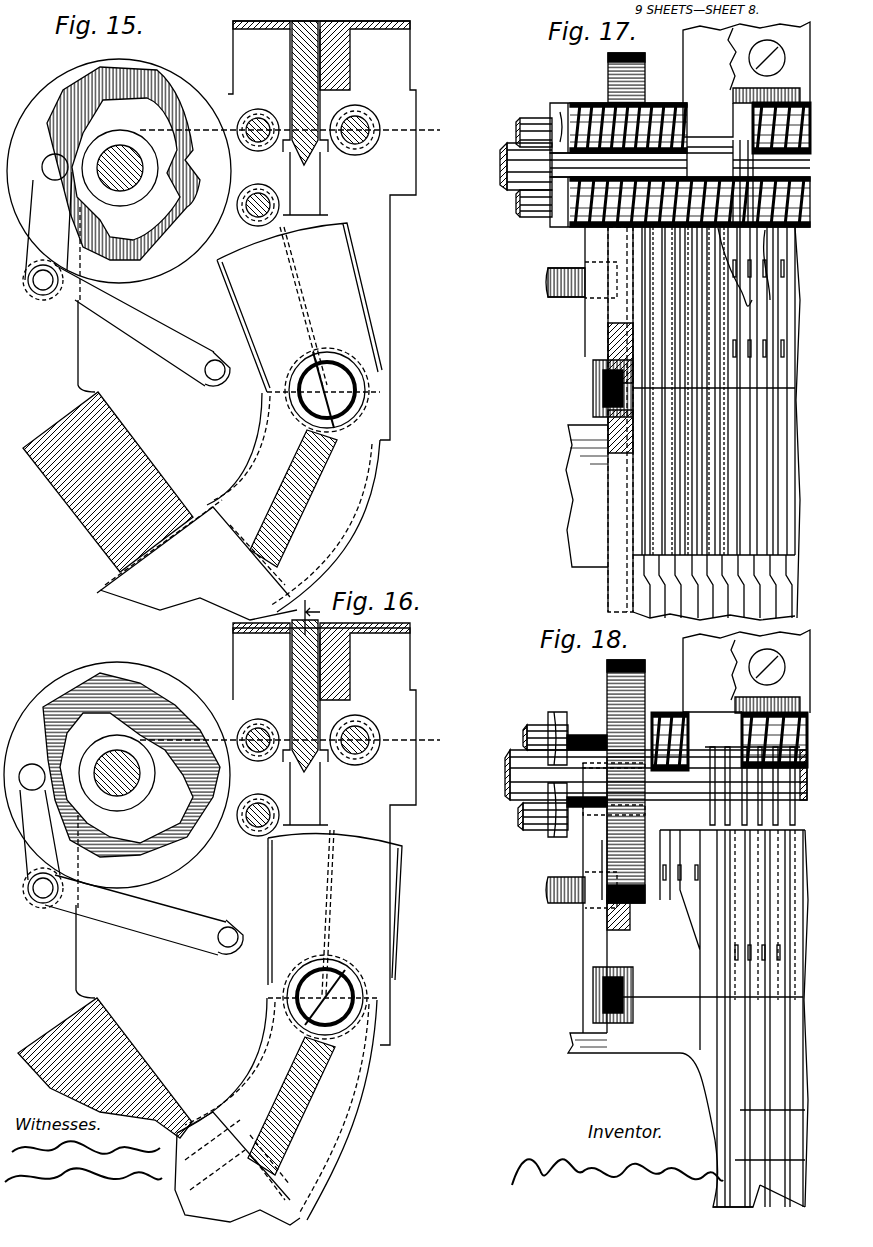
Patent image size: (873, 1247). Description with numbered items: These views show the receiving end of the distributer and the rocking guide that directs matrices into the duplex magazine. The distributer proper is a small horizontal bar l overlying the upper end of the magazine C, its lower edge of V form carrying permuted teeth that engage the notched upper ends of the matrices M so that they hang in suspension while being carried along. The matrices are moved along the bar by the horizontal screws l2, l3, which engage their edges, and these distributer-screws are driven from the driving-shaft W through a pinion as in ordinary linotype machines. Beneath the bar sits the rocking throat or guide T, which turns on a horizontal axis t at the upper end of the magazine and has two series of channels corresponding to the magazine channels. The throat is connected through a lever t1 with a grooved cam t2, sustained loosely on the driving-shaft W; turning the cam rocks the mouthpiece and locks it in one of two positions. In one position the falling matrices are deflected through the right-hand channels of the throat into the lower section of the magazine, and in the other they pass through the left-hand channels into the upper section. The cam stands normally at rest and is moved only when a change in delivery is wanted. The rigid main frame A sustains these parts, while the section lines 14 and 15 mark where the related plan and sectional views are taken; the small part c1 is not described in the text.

In FIG. 15, the driving-shaft W is at (120, 168).
In FIG. 16, the driving-shaft W is at (117, 773).
In FIG. 17, the driving-shaft W is at (508, 178).
In FIG. 18, the driving-shaft W is at (530, 777).
In FIG. 15, the grooved cam t2 is at (119, 171).
In FIG. 16, the grooved cam t2 is at (60, 690).
In FIG. 17, the grooved cam t2 is at (640, 70).
In FIG. 18, the grooved cam t2 is at (640, 665).
In FIG. 15, the lever t1 is at (126, 299).
In FIG. 16, the lever t1 is at (185, 930).
In FIG. 17, the lever t1 is at (592, 313).
In FIG. 18, the lever t1 is at (590, 912).
In FIG. 15, the horizontal axis t is at (332, 378).
In FIG. 16, the horizontal axis t is at (335, 1000).
In FIG. 17, the horizontal axis t is at (585, 400).
In FIG. 18, the horizontal axis t is at (600, 990).
In FIG. 15, the rocking throat T is at (299, 307).
In FIG. 16, the rocking throat T is at (335, 914).
In FIG. 17, the rocking throat T is at (704, 423).
In FIG. 18, the rocking throat T is at (712, 1018).
In FIG. 15, the distributer bar l is at (322, 105).
In FIG. 16, the distributer bar l is at (322, 712).
In FIG. 17, the distributer bar l is at (746, 124).
In FIG. 18, the distributer bar l is at (746, 671).
In FIG. 15, the horizontal screw l2 is at (256, 112).
In FIG. 16, the horizontal screw l2 is at (256, 722).
In FIG. 17, the horizontal screw l2 is at (538, 125).
In FIG. 18, the horizontal screw l2 is at (539, 725).
In FIG. 15, the horizontal screw l3 is at (270, 212).
In FIG. 16, the horizontal screw l3 is at (250, 830).
In FIG. 17, the horizontal screw l3 is at (538, 205).
In FIG. 18, the horizontal screw l3 is at (533, 828).
In FIG. 15, the matrices M is at (305, 107).
In FIG. 16, the matrices M is at (305, 712).
In FIG. 17, the matrices M is at (744, 267).
In FIG. 18, the matrices M is at (745, 806).
In FIG. 15, the main frame A is at (108, 482).
In FIG. 16, the main frame A is at (105, 1068).
In FIG. 17, the main frame A is at (583, 492).
In FIG. 18, the main frame A is at (660, 1120).
In FIG. 15, the magazine C is at (238, 506).
In FIG. 16, the magazine C is at (276, 1111).
In FIG. 18, the part c' c1 is at (725, 921).
In FIG. 15, the section line 14 14 is at (196, 55).
In FIG. 16, the section line 14 14 is at (200, 670).
In FIG. 17, the section line 14 14 is at (462, 85).
In FIG. 18, the section line 14 14 is at (440, 740).
In FIG. 17, the section line 15 15 is at (563, 372).
In FIG. 18, the section line 15 15 is at (554, 972).